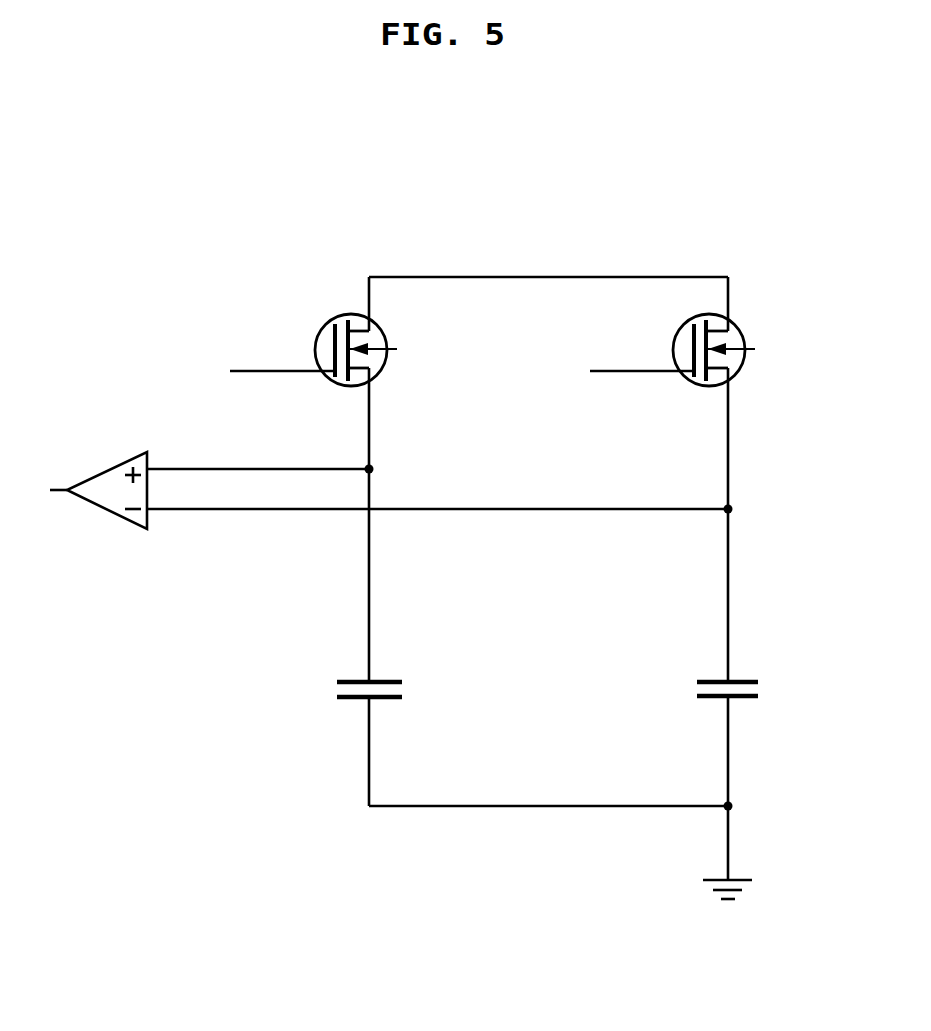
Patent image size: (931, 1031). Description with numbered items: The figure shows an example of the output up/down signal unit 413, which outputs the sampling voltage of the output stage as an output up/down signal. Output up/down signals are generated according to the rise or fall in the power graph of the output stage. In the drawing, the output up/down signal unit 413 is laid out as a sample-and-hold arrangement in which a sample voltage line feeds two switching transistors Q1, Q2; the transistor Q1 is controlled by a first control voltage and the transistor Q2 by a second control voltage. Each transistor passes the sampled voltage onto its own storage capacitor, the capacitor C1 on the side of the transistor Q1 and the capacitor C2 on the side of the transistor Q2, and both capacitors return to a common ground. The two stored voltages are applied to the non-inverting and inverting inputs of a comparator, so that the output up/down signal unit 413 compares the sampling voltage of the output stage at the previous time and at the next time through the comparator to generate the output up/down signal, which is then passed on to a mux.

The output up/down signal unit 413 is at (565, 191).
The first switching transistor Q1 is at (708, 336).
The second switching transistor Q2 is at (350, 336).
The first capacitor C1 is at (751, 691).
The second capacitor C2 is at (391, 691).